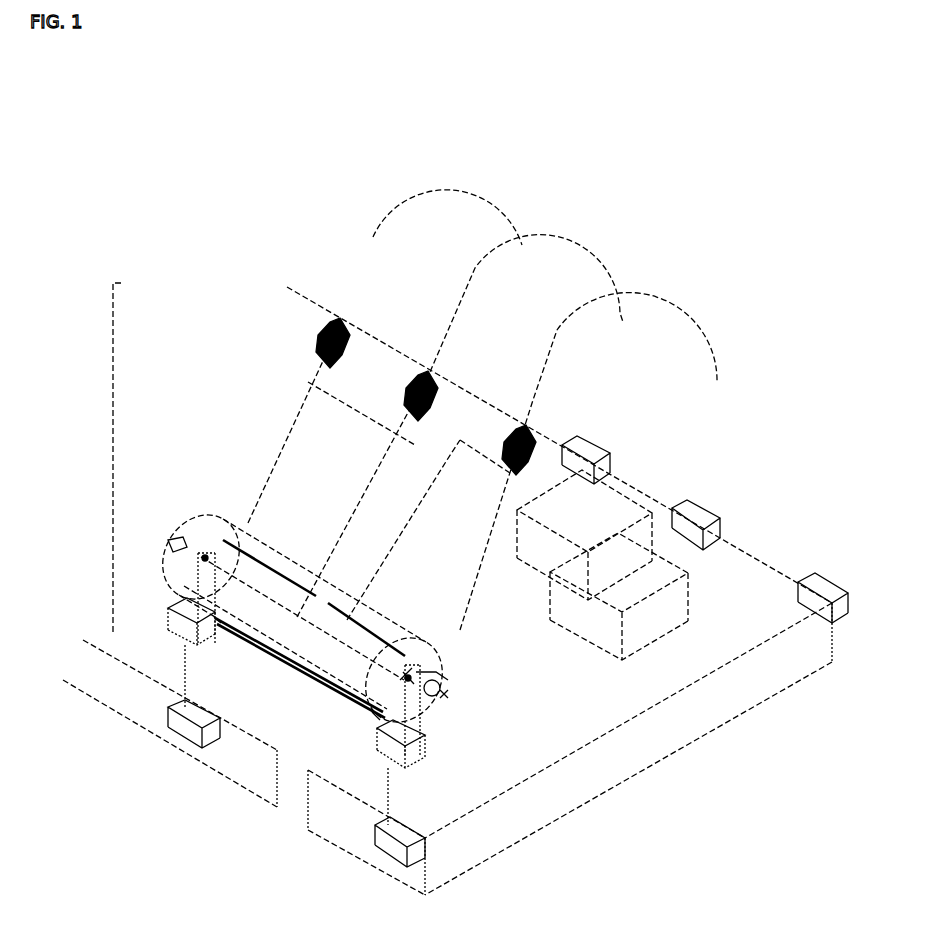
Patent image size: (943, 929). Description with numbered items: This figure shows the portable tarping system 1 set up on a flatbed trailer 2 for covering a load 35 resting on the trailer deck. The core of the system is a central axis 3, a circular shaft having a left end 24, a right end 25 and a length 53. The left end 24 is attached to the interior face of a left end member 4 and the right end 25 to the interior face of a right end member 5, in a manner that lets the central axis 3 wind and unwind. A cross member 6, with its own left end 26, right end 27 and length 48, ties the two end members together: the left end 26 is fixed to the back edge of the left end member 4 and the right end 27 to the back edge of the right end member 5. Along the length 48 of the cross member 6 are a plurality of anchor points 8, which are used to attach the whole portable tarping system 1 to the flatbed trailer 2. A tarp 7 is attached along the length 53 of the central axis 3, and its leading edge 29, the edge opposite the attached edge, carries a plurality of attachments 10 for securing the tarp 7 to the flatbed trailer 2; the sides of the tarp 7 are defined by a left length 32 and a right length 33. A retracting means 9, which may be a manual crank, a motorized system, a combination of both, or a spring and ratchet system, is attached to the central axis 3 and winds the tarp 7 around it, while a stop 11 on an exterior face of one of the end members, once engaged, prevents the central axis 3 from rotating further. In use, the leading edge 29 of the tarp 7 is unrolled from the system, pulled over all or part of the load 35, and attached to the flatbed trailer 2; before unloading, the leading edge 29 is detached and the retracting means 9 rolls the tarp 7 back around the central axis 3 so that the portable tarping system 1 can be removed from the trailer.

The portable tarping system 1 is at (113, 461).
The flatbed trailer 2 is at (455, 591).
The central axis 3 is at (302, 619).
The left end member 4 is at (198, 595).
The right end member 5 is at (437, 725).
The cross member 6 is at (314, 693).
The tarp 7 is at (507, 405).
The anchor points 8 is at (175, 635).
The retracting means 9 is at (453, 692).
The attachments 10 is at (509, 421).
The stop 11 is at (444, 671).
The left end 24 is at (197, 554).
The right end 25 is at (414, 672).
The left end of the cross member 26 is at (222, 630).
The right end of the cross member 27 is at (372, 726).
The leading edge 29 is at (392, 381).
The left length 32 is at (490, 588).
The right length 33 is at (257, 481).
The load 35 is at (602, 565).
The length 48 is at (293, 657).
The length 53 is at (316, 596).